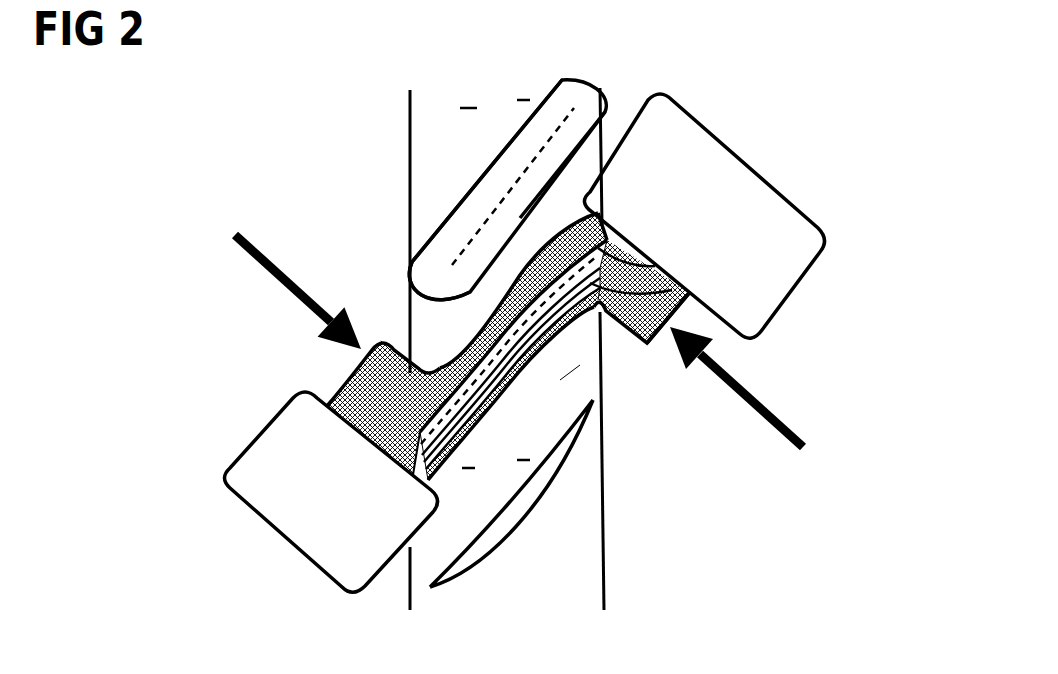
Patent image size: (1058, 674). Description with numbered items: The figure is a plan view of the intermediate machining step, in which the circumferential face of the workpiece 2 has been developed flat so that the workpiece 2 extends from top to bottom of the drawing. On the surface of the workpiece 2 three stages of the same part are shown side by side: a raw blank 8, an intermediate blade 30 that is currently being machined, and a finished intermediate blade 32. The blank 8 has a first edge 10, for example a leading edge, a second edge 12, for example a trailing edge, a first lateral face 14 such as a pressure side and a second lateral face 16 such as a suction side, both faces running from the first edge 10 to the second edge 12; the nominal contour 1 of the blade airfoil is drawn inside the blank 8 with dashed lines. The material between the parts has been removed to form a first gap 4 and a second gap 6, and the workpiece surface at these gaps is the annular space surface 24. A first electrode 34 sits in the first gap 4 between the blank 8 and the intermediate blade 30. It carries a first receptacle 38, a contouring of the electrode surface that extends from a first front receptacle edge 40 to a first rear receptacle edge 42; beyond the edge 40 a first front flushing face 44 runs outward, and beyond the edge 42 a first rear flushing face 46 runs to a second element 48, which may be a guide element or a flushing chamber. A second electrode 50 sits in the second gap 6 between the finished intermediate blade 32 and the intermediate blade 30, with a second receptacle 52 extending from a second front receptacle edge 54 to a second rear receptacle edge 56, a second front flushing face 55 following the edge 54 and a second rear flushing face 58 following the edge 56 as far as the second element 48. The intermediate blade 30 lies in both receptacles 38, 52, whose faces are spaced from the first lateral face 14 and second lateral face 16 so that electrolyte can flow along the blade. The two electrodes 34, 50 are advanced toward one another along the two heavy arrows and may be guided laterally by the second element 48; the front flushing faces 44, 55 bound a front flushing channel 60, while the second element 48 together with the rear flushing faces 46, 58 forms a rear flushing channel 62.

The nominal contour 1 is at (520, 173).
The workpiece 2 is at (622, 587).
The first gap 4 is at (442, 316).
The second gap 6 is at (578, 387).
The blank 8 is at (553, 100).
The first edge 10 is at (410, 292).
The second edge 12 is at (598, 86).
The first lateral face 14 is at (480, 205).
The second lateral face 16 is at (600, 157).
The annular space surface 24 is at (495, 283).
The intermediate blade 30 is at (578, 343).
The finished intermediate blade 32 is at (548, 472).
The first electrode 34 is at (340, 369).
The first receptacle 38 is at (470, 342).
The first front receptacle edge 40 is at (412, 433).
The first rear receptacle edge 42 is at (600, 217).
The first front flushing face 44 is at (412, 445).
The first rear flushing face 46 is at (612, 212).
The second element 48 is at (828, 243).
The second electrode 50 is at (550, 396).
The second receptacle 52 is at (685, 292).
The second front receptacle edge 54 is at (424, 477).
The second front flushing face 55 is at (418, 468).
The second rear receptacle edge 56 is at (630, 263).
The second rear flushing face 58 is at (607, 248).
The front flushing channel 60 is at (415, 455).
The rear flushing channel 62 is at (605, 224).